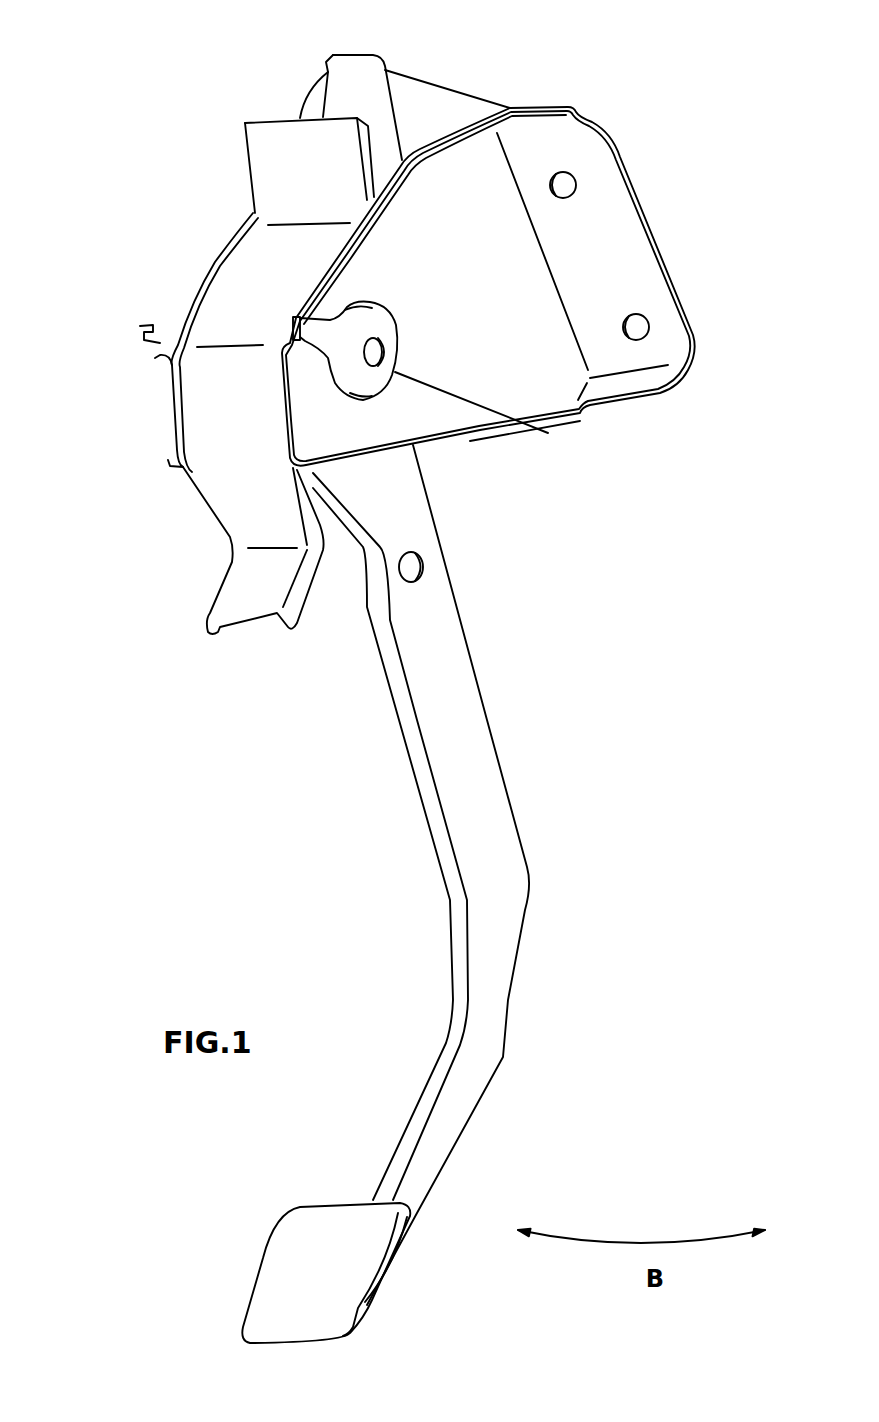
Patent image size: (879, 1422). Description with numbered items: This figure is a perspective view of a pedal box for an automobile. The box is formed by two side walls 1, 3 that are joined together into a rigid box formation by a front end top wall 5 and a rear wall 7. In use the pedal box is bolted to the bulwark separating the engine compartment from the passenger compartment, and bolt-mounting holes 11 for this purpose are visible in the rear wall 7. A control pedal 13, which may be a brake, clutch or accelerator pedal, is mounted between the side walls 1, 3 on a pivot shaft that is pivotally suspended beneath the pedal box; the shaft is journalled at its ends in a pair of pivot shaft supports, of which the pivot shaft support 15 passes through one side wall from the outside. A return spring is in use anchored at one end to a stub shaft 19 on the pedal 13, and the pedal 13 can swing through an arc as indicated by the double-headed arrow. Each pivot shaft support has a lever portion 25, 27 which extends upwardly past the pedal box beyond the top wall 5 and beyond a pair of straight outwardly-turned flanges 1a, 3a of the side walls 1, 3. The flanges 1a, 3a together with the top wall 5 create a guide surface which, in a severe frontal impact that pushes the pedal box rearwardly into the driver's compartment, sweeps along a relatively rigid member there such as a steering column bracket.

The side wall 1 is at (556, 495).
The outwardly-turned flange 1a is at (362, 242).
The side wall 3 is at (180, 420).
The outwardly-turned flange 3a is at (160, 360).
The front end top wall 5 is at (258, 253).
The rear wall 7 is at (420, 98).
The bolt-mounting holes 11 is at (565, 183).
The control pedal 13 is at (488, 785).
The pivot shaft support 15 is at (583, 445).
The stub shaft 19 is at (430, 570).
The lever portion 25 is at (293, 320).
The lever portion 27 is at (163, 328).